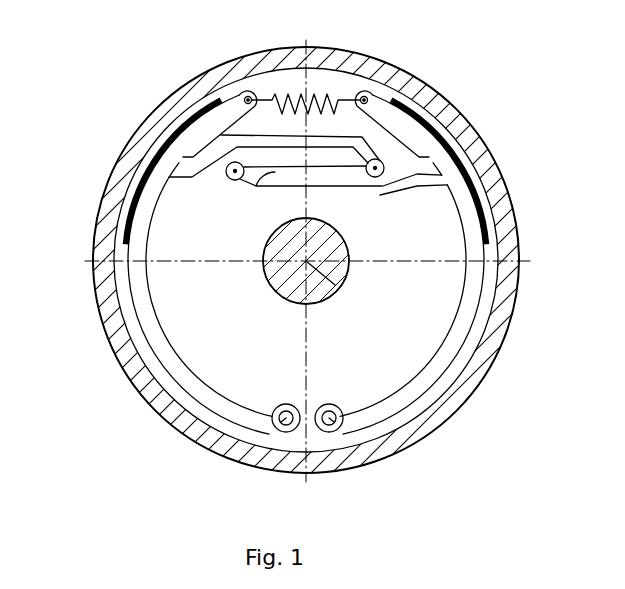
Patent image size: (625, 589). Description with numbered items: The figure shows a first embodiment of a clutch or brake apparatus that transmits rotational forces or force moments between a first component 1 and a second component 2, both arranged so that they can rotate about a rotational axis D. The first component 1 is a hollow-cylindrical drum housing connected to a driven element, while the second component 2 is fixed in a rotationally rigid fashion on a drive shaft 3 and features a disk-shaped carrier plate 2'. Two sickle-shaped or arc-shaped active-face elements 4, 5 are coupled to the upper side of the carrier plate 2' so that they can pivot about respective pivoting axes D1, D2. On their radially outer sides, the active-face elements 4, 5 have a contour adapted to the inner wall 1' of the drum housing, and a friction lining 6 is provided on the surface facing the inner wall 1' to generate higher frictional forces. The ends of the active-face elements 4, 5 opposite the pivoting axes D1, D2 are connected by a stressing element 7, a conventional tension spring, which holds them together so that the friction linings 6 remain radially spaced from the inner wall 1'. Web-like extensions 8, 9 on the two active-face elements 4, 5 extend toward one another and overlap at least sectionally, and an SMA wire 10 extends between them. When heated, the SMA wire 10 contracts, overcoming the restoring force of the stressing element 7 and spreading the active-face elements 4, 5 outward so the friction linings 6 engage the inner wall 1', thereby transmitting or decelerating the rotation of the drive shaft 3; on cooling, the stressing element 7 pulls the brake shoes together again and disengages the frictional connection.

The first component 1 is at (290, 260).
The inner wall 1' is at (312, 294).
The second component 2 is at (212, 283).
The carrier plate 2' is at (389, 262).
The drive shaft 3 is at (352, 236).
The active-face element 4 is at (150, 316).
The active-face element 5 is at (466, 318).
The friction lining 6 is at (176, 130).
The stressing element 7 is at (336, 98).
The web-like extension 8 is at (233, 138).
The web-like extension 9 is at (444, 184).
The SMA wire 10 is at (268, 177).
The rotational axis D is at (335, 285).
The pivoting axis D1 is at (284, 424).
The pivoting axis D2 is at (332, 424).